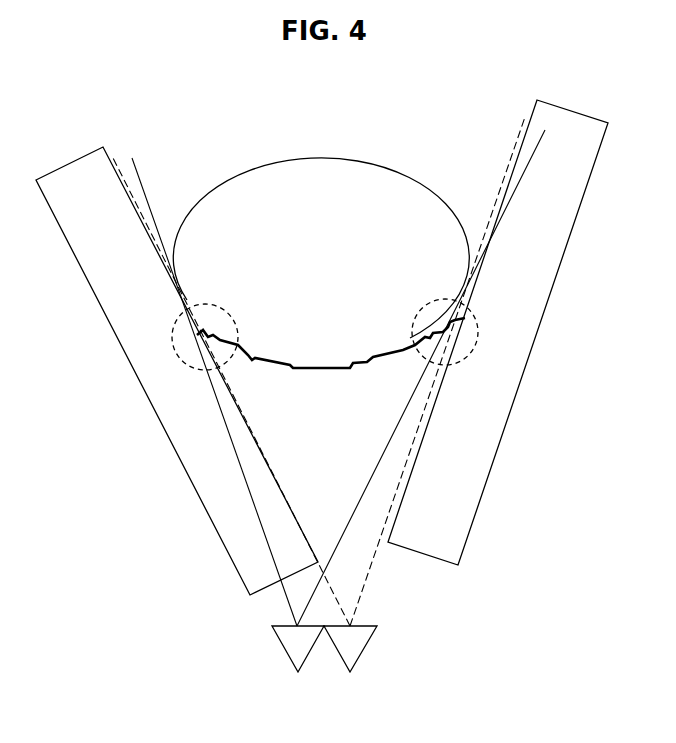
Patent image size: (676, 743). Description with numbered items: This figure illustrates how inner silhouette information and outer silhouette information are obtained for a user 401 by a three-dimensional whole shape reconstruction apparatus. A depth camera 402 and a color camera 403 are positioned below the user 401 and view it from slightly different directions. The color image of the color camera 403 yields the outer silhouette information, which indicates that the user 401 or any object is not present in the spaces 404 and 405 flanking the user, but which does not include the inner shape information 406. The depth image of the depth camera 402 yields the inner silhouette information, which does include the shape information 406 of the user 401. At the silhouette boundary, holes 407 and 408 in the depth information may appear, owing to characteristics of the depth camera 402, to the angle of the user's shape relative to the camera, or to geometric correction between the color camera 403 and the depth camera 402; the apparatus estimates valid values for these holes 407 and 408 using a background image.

The user 401 is at (320, 157).
The depth camera 402 is at (285, 652).
The color camera 403 is at (365, 652).
The space 404 is at (170, 442).
The space 405 is at (508, 425).
The shape information 406 is at (333, 368).
The hole 407 is at (202, 303).
The hole 408 is at (440, 300).